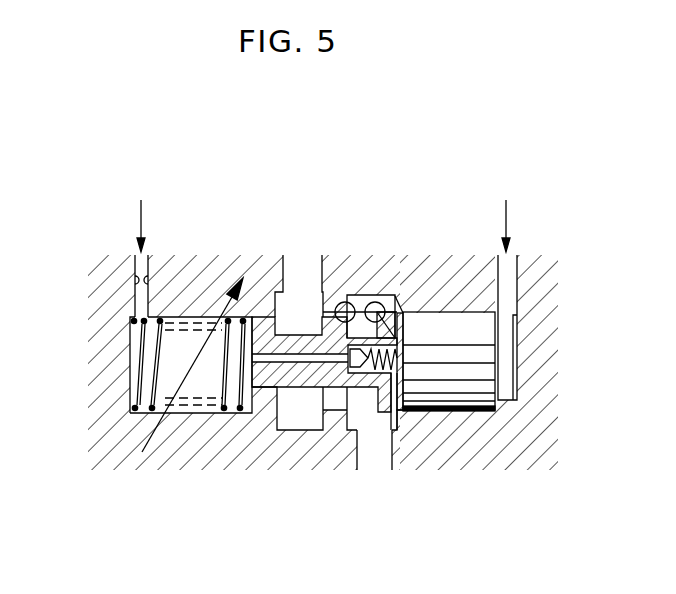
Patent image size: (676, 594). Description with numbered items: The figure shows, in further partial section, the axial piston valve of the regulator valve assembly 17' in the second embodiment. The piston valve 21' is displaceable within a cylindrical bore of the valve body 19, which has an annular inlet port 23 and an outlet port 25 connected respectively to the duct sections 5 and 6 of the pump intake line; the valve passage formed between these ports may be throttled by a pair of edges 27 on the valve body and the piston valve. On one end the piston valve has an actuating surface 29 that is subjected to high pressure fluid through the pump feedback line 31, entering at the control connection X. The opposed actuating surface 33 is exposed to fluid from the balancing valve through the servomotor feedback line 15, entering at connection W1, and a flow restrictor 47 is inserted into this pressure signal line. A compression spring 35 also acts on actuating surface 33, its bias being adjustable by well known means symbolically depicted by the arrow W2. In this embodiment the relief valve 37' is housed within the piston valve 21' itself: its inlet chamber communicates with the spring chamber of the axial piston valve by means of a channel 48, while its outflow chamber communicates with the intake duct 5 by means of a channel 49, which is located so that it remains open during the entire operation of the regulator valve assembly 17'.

The servomotor feedback line 15 is at (142, 245).
The first working connection W1 is at (140, 196).
The flow restrictor 47 is at (137, 280).
The compression spring 35 is at (137, 372).
The actuating surface 33 is at (237, 403).
The spring bias adjustment W2 is at (155, 430).
The channel 48 is at (268, 357).
The duct section 6 is at (299, 247).
The regulator valve assembly 17' is at (340, 257).
The edges 27 is at (373, 302).
The relief valve 37' is at (407, 256).
The valve body 19 is at (440, 309).
The pump feedback line 31 is at (506, 287).
The control connection X is at (506, 196).
The actuating surface 29 is at (496, 354).
The piston valve 21' is at (451, 462).
The channel 49 is at (388, 415).
The duct section 5 is at (373, 478).
The annular inlet port 23 is at (367, 408).
The outlet port 25 is at (298, 412).